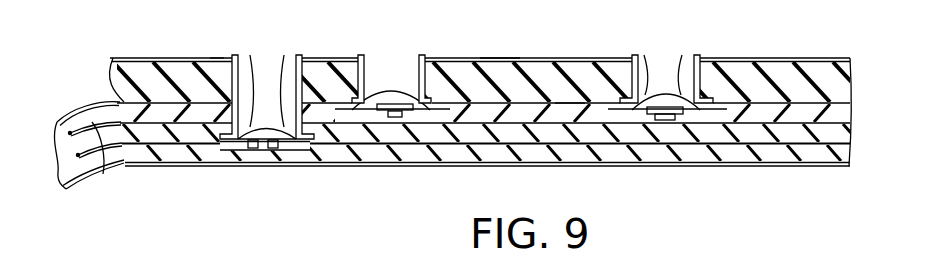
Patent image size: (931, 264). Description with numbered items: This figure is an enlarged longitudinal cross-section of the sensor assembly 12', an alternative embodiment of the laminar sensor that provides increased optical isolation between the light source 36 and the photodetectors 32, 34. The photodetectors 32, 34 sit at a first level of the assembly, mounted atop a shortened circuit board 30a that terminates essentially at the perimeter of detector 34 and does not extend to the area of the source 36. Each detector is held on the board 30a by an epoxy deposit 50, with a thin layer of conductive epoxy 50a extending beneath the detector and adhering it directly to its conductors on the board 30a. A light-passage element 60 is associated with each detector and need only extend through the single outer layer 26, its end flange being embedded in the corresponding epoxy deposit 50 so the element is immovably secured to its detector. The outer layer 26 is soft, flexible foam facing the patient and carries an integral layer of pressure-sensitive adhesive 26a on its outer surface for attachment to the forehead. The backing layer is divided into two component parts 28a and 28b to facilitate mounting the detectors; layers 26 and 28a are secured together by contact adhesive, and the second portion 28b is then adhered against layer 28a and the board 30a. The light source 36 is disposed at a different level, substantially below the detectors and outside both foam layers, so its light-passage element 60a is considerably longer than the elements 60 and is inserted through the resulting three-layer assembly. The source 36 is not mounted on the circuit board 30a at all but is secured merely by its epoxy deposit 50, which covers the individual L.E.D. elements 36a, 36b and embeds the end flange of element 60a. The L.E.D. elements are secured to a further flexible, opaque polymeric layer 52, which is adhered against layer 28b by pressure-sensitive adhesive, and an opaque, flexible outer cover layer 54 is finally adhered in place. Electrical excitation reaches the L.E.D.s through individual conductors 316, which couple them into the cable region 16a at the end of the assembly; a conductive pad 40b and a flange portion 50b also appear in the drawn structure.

The sensor assembly 12' is at (515, 42).
The flexible cable 16a is at (102, 100).
The outer layer 26 is at (838, 93).
The layer of pressure-sensitive adhesive 26a is at (794, 60).
The first portion of backing layer 28a is at (848, 118).
The second portion of backing layer 28b is at (846, 138).
The circuit board 30a is at (568, 112).
The photodetector 32 is at (679, 104).
The photodetector 34 is at (396, 99).
The light source 36 is at (276, 121).
The L.E.D. element 36a is at (254, 150).
The L.E.D. element 36b is at (274, 150).
The conductive pad 40b is at (218, 159).
The epoxy deposit 50 is at (254, 90).
The conductive epoxy layer 50a is at (405, 118).
The connector flange 50b is at (216, 57).
The further layer 52 is at (851, 157).
The outer cover layer 54 is at (804, 166).
The light-passage element 60 is at (428, 56).
The light-passage element 60a is at (300, 57).
The conductors 316 is at (103, 173).